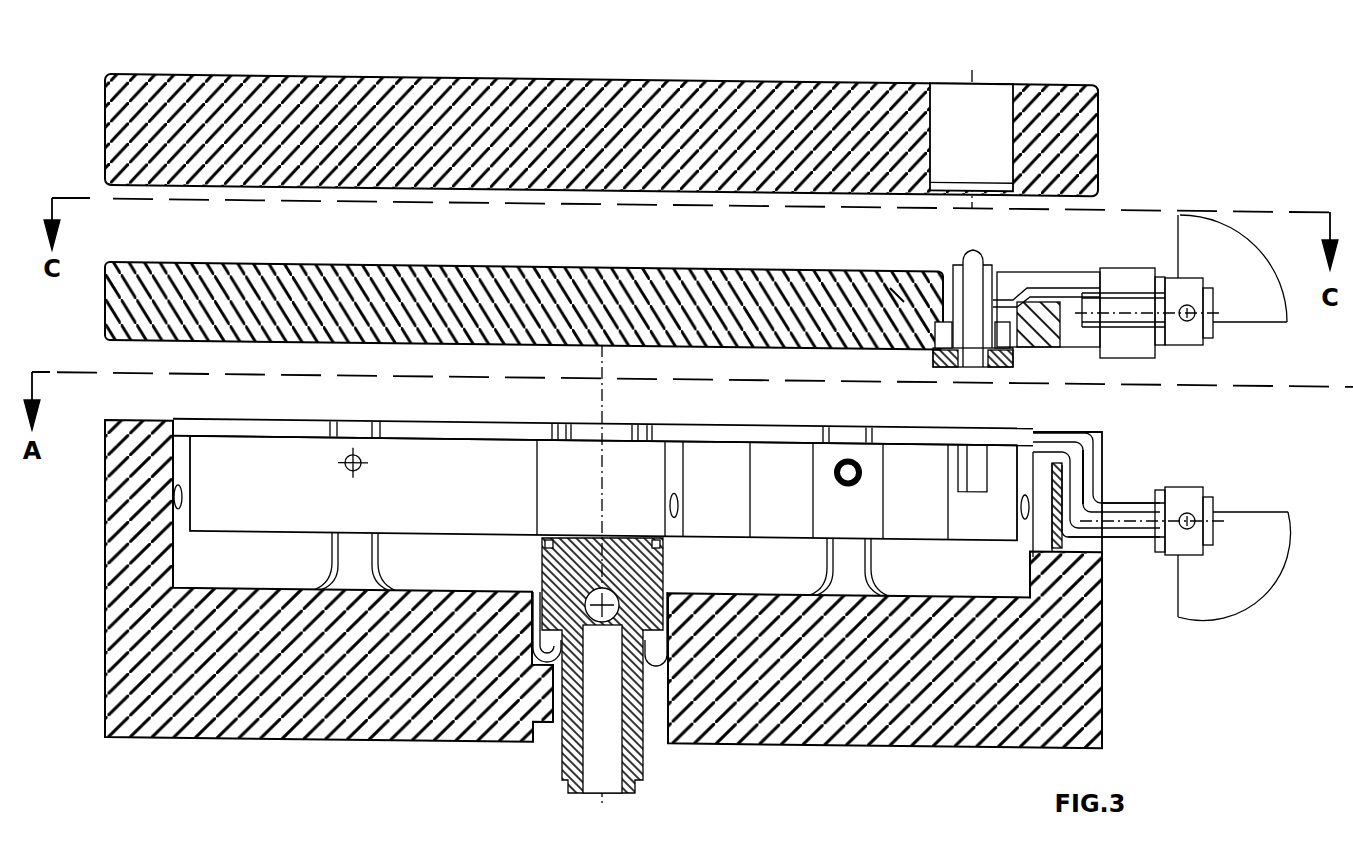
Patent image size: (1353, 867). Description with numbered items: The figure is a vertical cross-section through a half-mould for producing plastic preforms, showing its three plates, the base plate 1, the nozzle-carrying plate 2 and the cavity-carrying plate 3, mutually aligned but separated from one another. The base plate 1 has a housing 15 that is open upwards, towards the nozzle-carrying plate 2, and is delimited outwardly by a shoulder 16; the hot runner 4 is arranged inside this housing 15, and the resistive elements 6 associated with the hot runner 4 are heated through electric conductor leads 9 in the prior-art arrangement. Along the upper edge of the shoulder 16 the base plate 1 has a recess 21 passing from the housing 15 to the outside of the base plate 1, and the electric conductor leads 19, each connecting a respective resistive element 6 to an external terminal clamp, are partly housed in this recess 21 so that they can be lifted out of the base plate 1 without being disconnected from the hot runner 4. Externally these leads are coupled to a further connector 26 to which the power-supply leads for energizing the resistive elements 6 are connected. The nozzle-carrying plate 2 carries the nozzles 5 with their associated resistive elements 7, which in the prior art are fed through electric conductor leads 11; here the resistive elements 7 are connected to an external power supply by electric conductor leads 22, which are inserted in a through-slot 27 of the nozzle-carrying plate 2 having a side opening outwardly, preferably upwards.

The base plate 1 is at (1102, 690).
The nozzle-carrying plate 2 is at (888, 272).
The cavity-carrying plate 3 is at (1100, 155).
The hot runner 4 is at (455, 462).
The nozzles 5 is at (970, 282).
The resistive elements 6 is at (1022, 455).
The resistive elements 7 is at (897, 295).
The electric conductor leads 9 is at (1083, 468).
The electric conductor leads 11 is at (1115, 320).
The housing 15 is at (773, 577).
The shoulder 16 is at (1068, 428).
The electric conductor leads 19 is at (1115, 503).
The recess 21 is at (1092, 438).
The electric conductor leads 22 is at (1117, 290).
The further connector 26 is at (1210, 507).
The through-slot 27 is at (1065, 278).